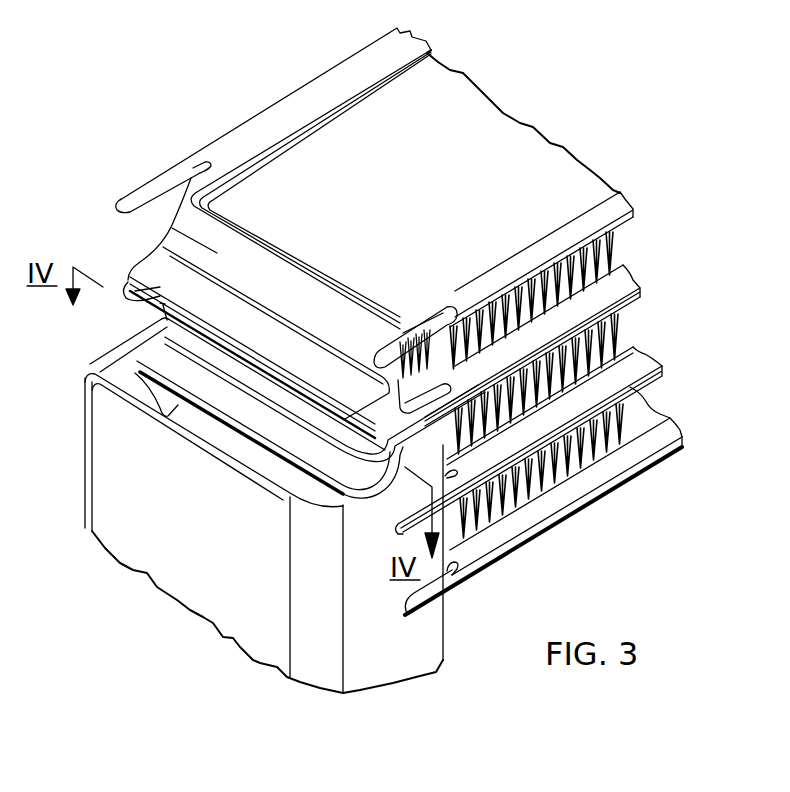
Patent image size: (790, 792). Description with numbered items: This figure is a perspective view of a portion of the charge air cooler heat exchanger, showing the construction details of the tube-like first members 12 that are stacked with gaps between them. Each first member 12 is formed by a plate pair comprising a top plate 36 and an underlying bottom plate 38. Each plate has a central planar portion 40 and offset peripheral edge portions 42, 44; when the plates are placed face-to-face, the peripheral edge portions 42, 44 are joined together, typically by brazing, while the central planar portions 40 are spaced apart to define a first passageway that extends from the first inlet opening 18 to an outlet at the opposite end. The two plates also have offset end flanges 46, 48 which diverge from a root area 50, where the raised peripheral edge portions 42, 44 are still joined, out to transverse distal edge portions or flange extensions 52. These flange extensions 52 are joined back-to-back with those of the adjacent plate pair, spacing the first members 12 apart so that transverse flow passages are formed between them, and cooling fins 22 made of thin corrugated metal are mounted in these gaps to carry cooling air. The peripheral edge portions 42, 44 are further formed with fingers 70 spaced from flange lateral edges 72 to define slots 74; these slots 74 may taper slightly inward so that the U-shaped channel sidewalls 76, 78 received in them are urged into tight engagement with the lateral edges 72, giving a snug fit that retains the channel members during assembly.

The first member 12 is at (517, 443).
The first inlet opening 18 is at (372, 420).
The cooling fins 22 is at (600, 247).
The top plate 36 is at (643, 357).
The bottom plate 38 is at (655, 378).
The central planar portion 40 is at (432, 213).
The offset peripheral edge portion 42 is at (617, 205).
The offset peripheral edge portion 44 is at (400, 47).
The offset end flange 46 is at (457, 320).
The offset end flange 48 is at (187, 232).
The root area 50 is at (217, 187).
The flange extension 52 is at (223, 383).
The finger 70 is at (135, 199).
The flange lateral edge 72 is at (185, 238).
The slot 74 is at (200, 167).
The channel sidewall 76 is at (137, 333).
The channel sidewall 78 is at (400, 673).